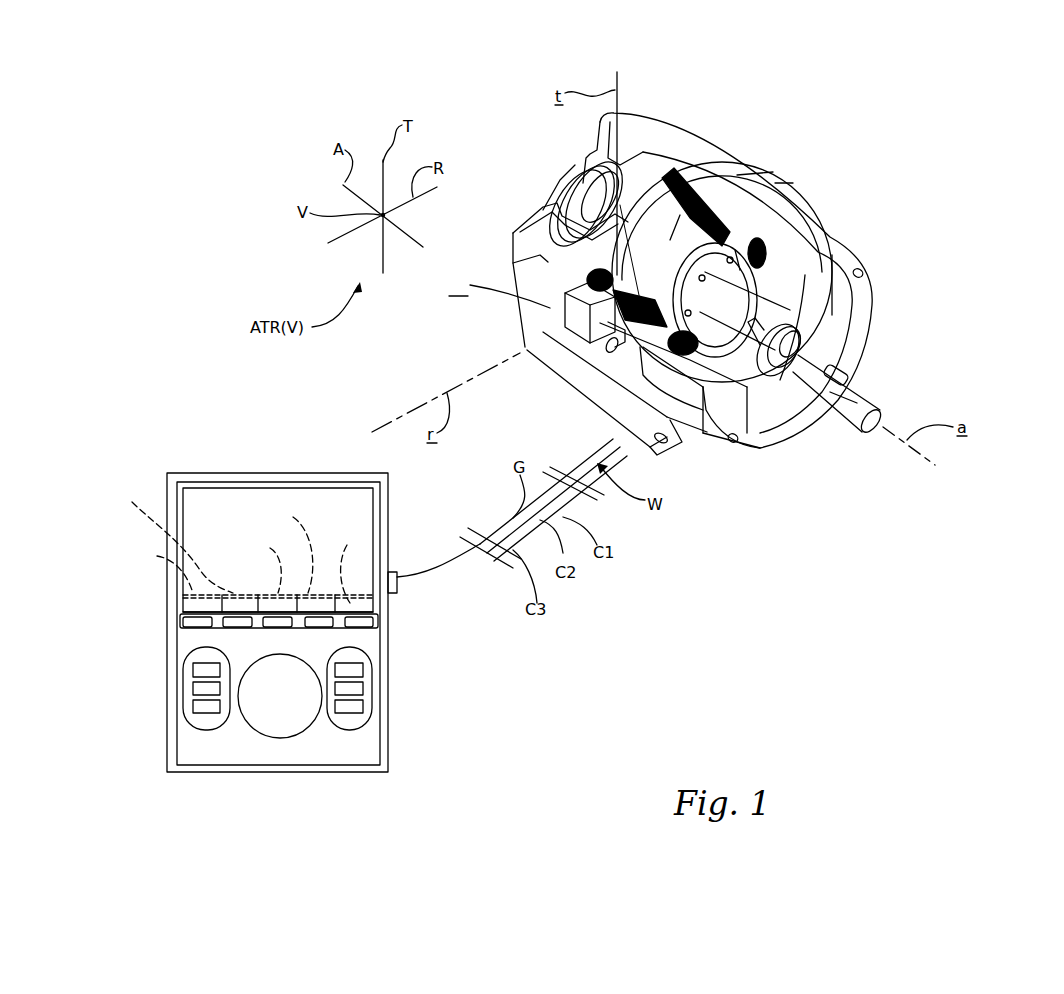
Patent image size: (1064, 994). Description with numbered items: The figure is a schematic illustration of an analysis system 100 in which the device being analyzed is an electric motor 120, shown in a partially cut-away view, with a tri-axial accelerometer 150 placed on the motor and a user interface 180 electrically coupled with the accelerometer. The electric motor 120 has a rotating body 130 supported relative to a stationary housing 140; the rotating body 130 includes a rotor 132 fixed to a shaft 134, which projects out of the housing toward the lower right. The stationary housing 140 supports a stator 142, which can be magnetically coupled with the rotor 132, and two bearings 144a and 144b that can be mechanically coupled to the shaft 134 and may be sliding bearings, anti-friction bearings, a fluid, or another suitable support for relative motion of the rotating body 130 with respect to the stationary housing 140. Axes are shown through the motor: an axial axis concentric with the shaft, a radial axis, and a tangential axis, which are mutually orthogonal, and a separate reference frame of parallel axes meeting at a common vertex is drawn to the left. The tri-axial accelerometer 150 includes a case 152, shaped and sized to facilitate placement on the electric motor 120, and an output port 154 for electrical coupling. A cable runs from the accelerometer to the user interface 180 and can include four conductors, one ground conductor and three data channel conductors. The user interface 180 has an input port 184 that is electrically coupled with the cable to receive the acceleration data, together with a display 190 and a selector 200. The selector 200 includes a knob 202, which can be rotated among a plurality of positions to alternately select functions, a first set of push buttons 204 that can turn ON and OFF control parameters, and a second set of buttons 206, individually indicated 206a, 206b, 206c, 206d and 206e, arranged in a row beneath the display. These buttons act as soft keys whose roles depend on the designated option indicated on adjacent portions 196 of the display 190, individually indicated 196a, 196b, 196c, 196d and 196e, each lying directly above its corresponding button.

The analysis system 100 is at (812, 658).
The electric motor 120 is at (945, 180).
The rotating body 130 is at (837, 240).
The rotor 132 is at (740, 153).
The shaft 134 is at (845, 407).
The stationary housing 140 is at (676, 458).
The stator 142 is at (698, 137).
The bearing 144a is at (763, 393).
The bearing 144b is at (570, 181).
The tri-axial accelerometer 150 is at (550, 313).
The case 152 is at (580, 385).
The output port 154 is at (602, 408).
The user interface 180 is at (400, 755).
The input port 184 is at (397, 573).
The display 190 is at (382, 505).
The portions of the display 196 is at (393, 583).
The portion of the display 196a is at (155, 569).
The portion of the display 196b is at (174, 538).
The portion of the display 196c is at (257, 564).
The portion of the display 196d is at (284, 548).
The portion of the display 196e is at (351, 565).
The selector 200 is at (233, 748).
The knob 202 is at (275, 725).
The first set of push buttons 204 is at (185, 712).
The second set of buttons 206 is at (393, 603).
The button 206a is at (180, 620).
The button 206b is at (223, 627).
The button 206c is at (265, 629).
The button 206d is at (360, 632).
The button 206e is at (335, 625).